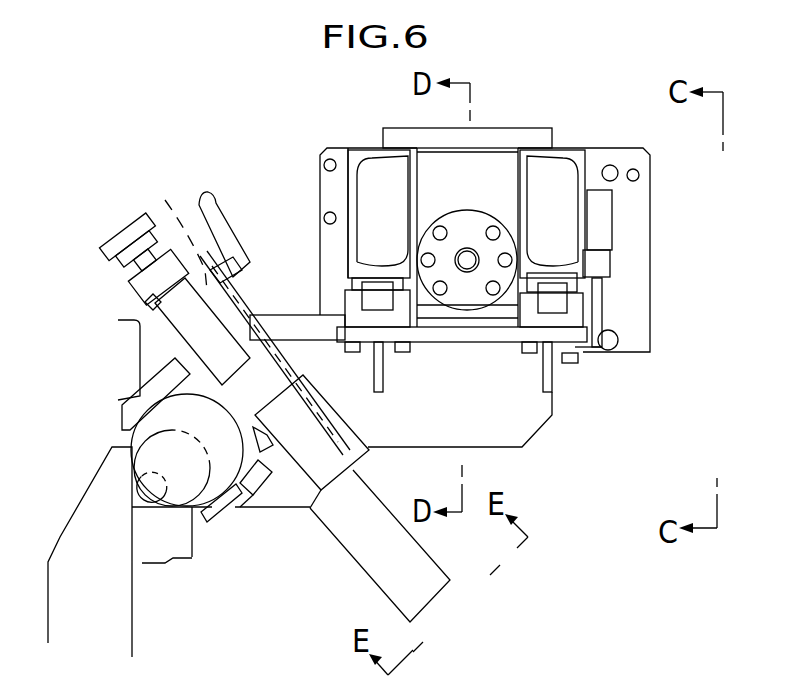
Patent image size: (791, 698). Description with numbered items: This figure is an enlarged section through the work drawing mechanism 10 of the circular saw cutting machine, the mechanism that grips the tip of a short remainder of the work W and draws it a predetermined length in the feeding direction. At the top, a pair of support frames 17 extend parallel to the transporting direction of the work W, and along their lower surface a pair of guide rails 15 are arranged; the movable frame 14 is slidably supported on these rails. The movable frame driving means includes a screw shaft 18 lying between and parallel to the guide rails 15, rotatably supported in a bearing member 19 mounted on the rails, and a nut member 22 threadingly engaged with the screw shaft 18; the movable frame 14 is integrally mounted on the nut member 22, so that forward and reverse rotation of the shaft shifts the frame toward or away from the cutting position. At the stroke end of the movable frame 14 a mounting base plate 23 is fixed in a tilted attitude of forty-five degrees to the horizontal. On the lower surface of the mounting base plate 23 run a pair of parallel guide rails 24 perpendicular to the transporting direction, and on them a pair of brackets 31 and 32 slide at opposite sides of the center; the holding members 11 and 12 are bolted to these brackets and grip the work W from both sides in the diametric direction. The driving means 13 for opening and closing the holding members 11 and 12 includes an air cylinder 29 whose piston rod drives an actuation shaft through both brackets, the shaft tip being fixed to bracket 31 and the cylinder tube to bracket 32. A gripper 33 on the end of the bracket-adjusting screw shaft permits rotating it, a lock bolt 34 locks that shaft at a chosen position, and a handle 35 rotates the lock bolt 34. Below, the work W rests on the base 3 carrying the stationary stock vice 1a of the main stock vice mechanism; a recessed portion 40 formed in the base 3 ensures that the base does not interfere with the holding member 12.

The stationary stock vice 1a is at (113, 478).
The base 3 is at (160, 530).
The work drawing mechanism 10 is at (293, 146).
The holding member 11 is at (121, 400).
The holding member 12 is at (243, 500).
The driving means 13 is at (365, 418).
The movable frame 14 is at (295, 304).
The guide rails 15 is at (374, 292).
The support frames 17 is at (366, 150).
The screw shaft 18 is at (467, 250).
The bearing member 19 is at (491, 120).
The nut member 22 is at (483, 220).
The mounting base plate 23 is at (320, 412).
The guide rails 24 is at (256, 382).
The air cylinder 29 is at (368, 550).
The bracket 31 is at (128, 321).
The bracket 32 is at (298, 488).
The gripper 33 is at (128, 242).
The lock bolt 34 is at (175, 228).
The handle 35 is at (203, 190).
The recessed portion 40 is at (197, 537).
The work W is at (222, 510).